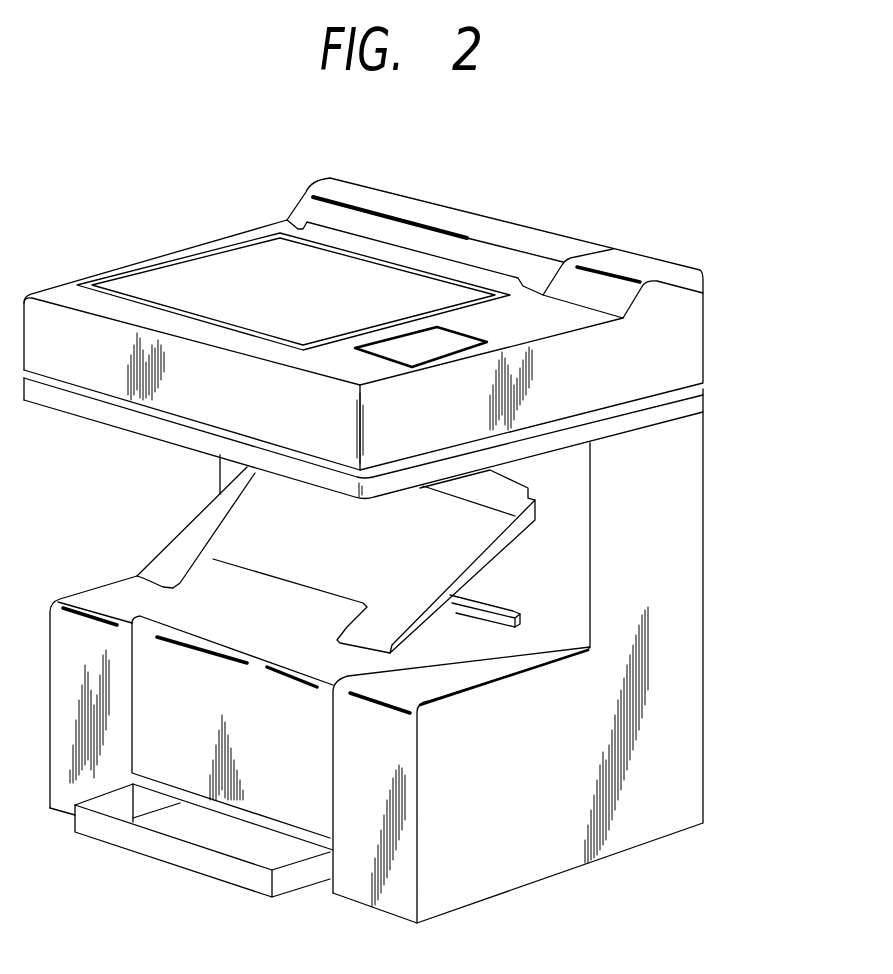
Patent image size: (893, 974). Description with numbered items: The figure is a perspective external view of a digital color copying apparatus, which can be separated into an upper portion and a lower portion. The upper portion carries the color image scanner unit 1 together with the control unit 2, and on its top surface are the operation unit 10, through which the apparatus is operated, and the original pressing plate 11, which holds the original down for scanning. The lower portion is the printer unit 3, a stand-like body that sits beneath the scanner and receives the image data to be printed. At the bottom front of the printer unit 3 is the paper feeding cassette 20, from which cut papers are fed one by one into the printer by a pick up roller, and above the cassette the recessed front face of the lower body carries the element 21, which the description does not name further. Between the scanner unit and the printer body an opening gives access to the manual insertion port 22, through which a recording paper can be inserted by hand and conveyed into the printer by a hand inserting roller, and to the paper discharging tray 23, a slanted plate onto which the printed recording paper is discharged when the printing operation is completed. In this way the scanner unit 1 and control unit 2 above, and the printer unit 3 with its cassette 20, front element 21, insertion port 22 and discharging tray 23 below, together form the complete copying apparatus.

The color image scanner unit 1 is at (417, 338).
The control unit 2 is at (692, 327).
The printer unit 3 is at (690, 702).
The operation unit 10 is at (450, 338).
The original pressing plate 11 is at (138, 268).
The paper feeding cassette 20 is at (148, 848).
The front panel of stand 21 is at (317, 781).
The manual insertion port 22 is at (517, 598).
The paper discharging tray 23 is at (165, 548).